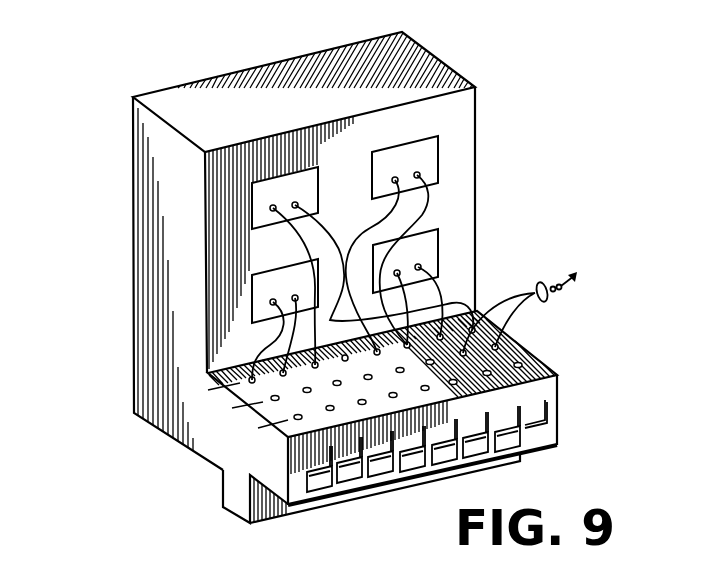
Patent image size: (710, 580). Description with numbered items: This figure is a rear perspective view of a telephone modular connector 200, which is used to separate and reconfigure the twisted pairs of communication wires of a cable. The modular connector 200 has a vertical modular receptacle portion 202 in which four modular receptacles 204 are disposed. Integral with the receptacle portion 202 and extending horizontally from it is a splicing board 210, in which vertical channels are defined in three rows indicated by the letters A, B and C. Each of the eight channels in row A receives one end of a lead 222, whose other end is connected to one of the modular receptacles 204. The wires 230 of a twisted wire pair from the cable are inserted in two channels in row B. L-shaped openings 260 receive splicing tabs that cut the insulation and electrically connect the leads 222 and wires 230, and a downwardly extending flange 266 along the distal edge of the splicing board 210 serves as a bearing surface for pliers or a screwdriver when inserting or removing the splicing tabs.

The telephone modular connector 200 is at (523, 86).
The vertical modular receptacle portion 202 is at (151, 200).
The modular receptacles 204 is at (260, 207).
The splicing board 210 is at (263, 445).
The leads 222 is at (297, 240).
The wires 230 is at (545, 300).
The L-shaped openings 260 is at (558, 432).
The downwardly extending flange 266 is at (235, 497).